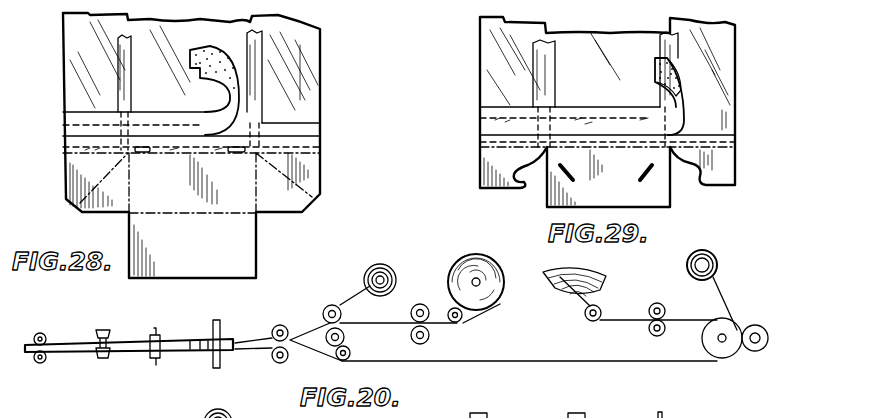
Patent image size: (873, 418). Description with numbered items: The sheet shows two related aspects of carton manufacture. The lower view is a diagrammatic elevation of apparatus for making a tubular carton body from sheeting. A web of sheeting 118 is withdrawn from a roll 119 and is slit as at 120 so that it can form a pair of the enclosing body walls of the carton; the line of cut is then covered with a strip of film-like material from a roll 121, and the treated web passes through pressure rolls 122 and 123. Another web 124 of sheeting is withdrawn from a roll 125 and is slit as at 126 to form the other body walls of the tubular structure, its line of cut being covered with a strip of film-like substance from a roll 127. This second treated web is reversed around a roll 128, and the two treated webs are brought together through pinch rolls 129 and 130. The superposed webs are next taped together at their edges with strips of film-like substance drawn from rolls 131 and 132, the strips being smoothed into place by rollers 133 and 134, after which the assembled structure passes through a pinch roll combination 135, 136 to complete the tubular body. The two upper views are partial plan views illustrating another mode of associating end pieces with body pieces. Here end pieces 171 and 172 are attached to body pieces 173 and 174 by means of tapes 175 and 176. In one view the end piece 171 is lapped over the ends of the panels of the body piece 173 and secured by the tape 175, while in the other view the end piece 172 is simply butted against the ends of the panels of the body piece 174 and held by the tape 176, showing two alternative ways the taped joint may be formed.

In FIG. 20, the web of sheeting 118 is at (460, 323).
In FIG. 20, the roll 119 is at (502, 300).
In FIG. 20, the slit 120 is at (420, 303).
In FIG. 20, the roll 121 is at (378, 264).
In FIG. 20, the pressure roll 122 is at (346, 293).
In FIG. 20, the pressure roll 123 is at (345, 337).
In FIG. 20, the web 124 is at (585, 318).
In FIG. 20, the roll 125 is at (600, 283).
In FIG. 20, the slit 126 is at (663, 304).
In FIG. 20, the roll 127 is at (717, 265).
In FIG. 20, the roll 128 is at (726, 350).
In FIG. 20, the pinch roll 129 is at (276, 325).
In FIG. 20, the pinch roll 130 is at (276, 363).
In FIG. 20, the roll 131 is at (208, 411).
In FIG. 20, the roll 132 is at (222, 357).
In FIG. 20, the roller 133 is at (129, 373).
In FIG. 20, the roller 134 is at (108, 328).
In FIG. 20, the pinch roll 135 is at (46, 332).
In FIG. 20, the pinch roll 136 is at (43, 364).
In FIG. 28, the end piece 171 is at (257, 249).
In FIG. 29, the end piece 172 is at (735, 160).
In FIG. 28, the body piece 173 is at (320, 62).
In FIG. 29, the body piece 174 is at (735, 65).
In FIG. 28, the tape 175 is at (206, 88).
In FIG. 29, the tape 176 is at (656, 64).